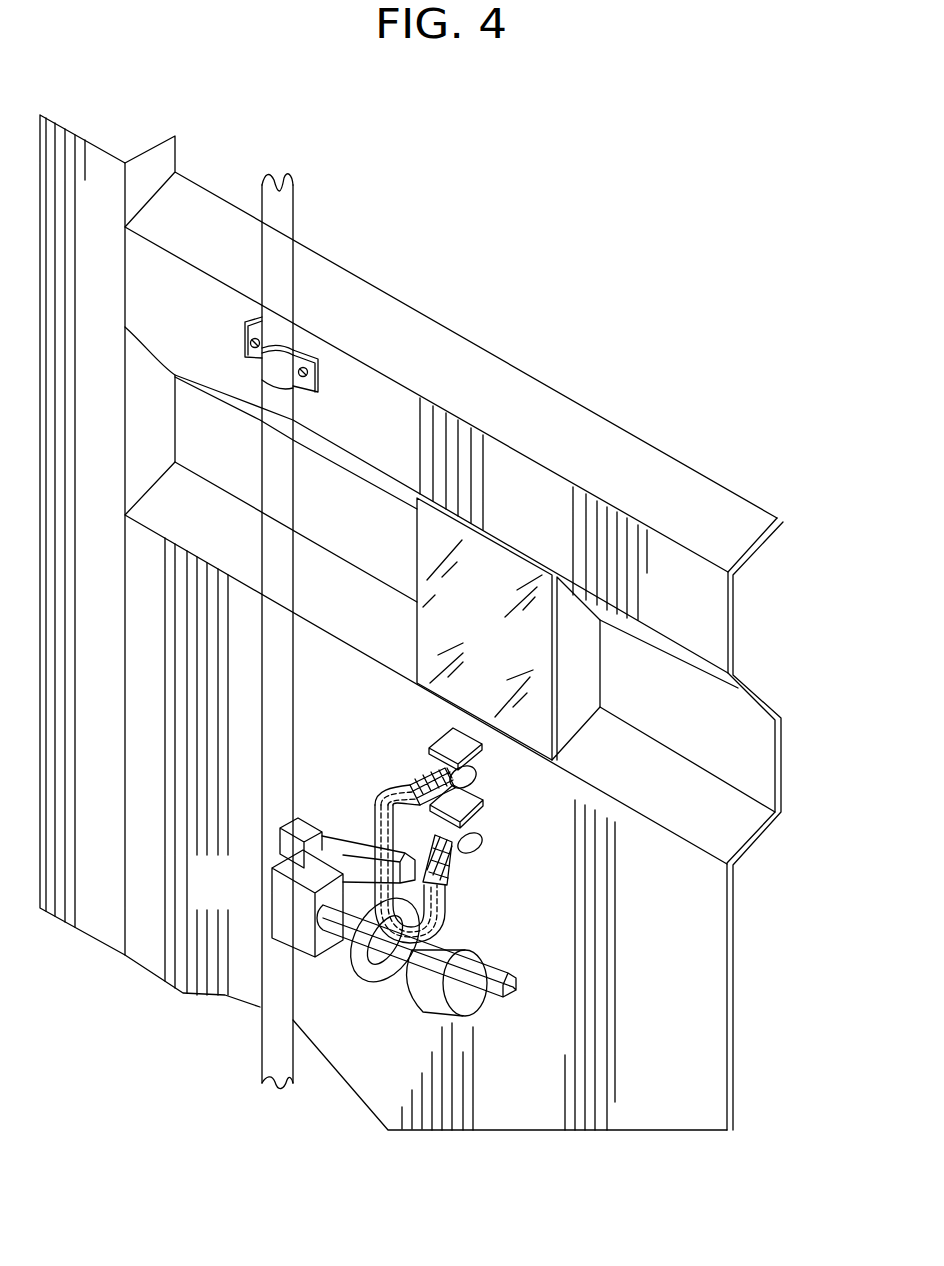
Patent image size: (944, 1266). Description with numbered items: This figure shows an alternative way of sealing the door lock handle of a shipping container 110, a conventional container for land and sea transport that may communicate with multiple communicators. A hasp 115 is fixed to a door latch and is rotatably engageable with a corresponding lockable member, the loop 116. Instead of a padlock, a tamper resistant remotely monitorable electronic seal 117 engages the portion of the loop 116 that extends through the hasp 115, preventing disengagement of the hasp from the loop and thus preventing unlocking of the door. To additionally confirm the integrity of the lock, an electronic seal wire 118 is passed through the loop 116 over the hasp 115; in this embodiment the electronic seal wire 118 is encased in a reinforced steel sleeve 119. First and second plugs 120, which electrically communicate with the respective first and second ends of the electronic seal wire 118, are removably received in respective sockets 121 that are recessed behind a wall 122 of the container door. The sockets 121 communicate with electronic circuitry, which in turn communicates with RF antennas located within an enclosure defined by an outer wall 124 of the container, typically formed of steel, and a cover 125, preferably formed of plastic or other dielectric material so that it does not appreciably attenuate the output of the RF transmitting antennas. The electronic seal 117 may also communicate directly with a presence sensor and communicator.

The shipping container 110 is at (165, 1023).
The hasp 115 is at (510, 990).
The loop 116 is at (367, 967).
The tamper resistant remotely monitorable electronic seal 117 is at (283, 910).
The electronic seal wire 118 is at (397, 802).
The reinforced steel sleeve 119 is at (373, 828).
The plugs 120 is at (485, 830).
The sockets 121 is at (480, 778).
The wall 122 is at (697, 950).
The outer wall 124 is at (763, 757).
The cover 125 is at (527, 650).